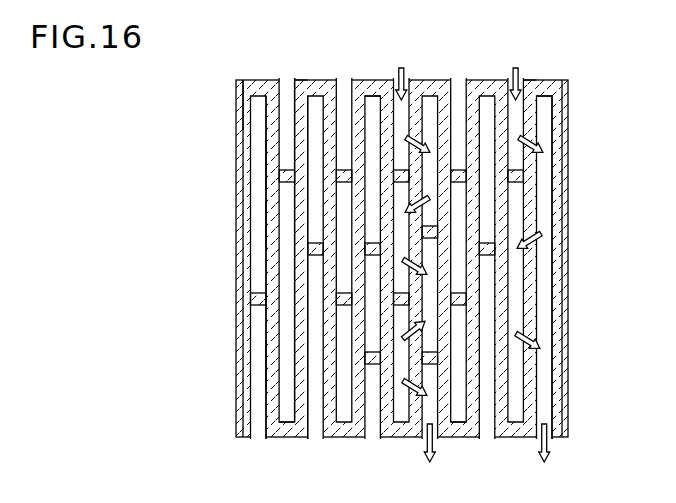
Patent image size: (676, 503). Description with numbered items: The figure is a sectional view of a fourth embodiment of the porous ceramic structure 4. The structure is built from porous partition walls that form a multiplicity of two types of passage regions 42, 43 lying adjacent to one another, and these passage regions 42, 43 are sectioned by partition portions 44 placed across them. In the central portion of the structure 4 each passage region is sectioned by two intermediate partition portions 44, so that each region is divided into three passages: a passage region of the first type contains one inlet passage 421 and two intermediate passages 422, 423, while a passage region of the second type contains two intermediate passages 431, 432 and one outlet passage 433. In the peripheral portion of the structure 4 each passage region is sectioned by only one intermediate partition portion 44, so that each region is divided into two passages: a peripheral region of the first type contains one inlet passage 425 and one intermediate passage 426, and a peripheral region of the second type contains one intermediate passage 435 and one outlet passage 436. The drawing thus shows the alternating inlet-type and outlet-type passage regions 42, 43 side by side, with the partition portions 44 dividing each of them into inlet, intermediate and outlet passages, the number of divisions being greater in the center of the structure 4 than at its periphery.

The porous ceramic structure 4 is at (551, 78).
The passage region 42 is at (372, 97).
The passage region 43 is at (430, 78).
The partition portions 44 is at (240, 130).
The inlet passage 421 is at (374, 102).
The intermediate passage 422 is at (306, 250).
The intermediate passage 423 is at (372, 366).
The inlet passage 425 is at (240, 104).
The intermediate passage 426 is at (262, 222).
The intermediate passage 431 is at (300, 82).
The intermediate passage 432 is at (250, 298).
The outlet passage 433 is at (378, 426).
The intermediate passage 435 is at (262, 163).
The outlet passage 436 is at (272, 360).